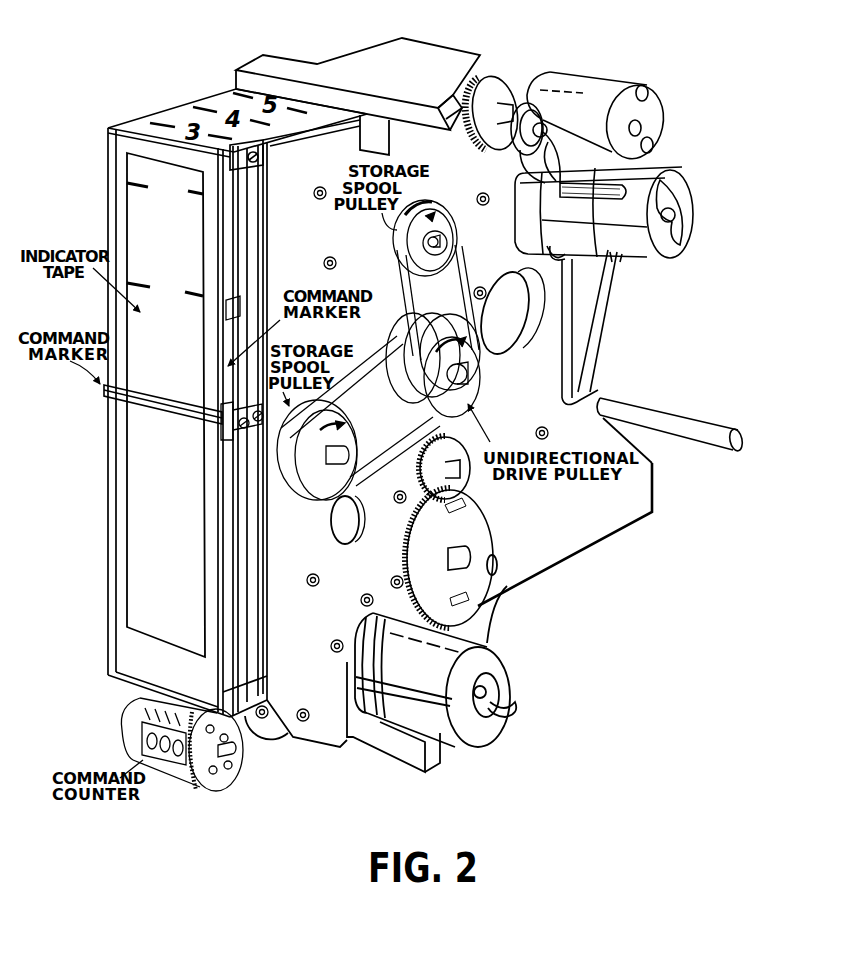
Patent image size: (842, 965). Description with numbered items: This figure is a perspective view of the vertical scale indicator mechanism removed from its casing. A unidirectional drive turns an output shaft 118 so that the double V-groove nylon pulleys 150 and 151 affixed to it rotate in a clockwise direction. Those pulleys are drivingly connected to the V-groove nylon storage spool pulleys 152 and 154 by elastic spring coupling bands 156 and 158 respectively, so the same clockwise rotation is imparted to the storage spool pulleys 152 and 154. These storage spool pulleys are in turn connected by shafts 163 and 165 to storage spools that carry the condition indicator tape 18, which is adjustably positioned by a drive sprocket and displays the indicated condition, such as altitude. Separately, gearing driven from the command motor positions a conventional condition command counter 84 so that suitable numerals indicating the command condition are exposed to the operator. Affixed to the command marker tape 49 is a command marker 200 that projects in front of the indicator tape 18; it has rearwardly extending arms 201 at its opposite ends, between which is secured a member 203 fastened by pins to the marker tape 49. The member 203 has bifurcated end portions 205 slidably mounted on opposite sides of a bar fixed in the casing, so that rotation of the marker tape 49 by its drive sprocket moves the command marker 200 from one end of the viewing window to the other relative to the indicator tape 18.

The condition indicator tape 18 is at (135, 233).
The command marker tape 49 is at (230, 310).
The condition command counter 84 is at (163, 753).
The output shaft 118 is at (468, 381).
The double V-groove nylon pulley 150 is at (453, 323).
The double V-groove nylon pulley 151 is at (477, 371).
The storage spool pulley 152 is at (316, 494).
The storage spool pulley 154 is at (453, 231).
The elastic spring coupling band 156 is at (371, 377).
The elastic spring coupling band 158 is at (467, 274).
The shaft 163 is at (350, 458).
The shaft 165 is at (437, 238).
The command marker 200 is at (108, 390).
The rearwardly extending arms 201 is at (240, 444).
The member 203 is at (224, 404).
The bifurcated end portions 205 is at (224, 432).